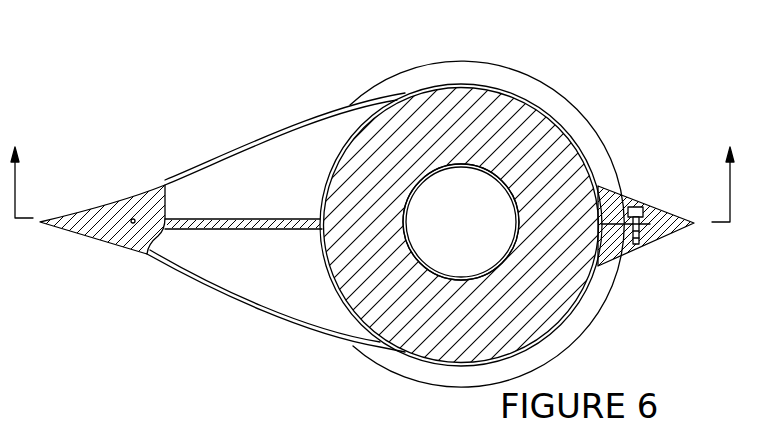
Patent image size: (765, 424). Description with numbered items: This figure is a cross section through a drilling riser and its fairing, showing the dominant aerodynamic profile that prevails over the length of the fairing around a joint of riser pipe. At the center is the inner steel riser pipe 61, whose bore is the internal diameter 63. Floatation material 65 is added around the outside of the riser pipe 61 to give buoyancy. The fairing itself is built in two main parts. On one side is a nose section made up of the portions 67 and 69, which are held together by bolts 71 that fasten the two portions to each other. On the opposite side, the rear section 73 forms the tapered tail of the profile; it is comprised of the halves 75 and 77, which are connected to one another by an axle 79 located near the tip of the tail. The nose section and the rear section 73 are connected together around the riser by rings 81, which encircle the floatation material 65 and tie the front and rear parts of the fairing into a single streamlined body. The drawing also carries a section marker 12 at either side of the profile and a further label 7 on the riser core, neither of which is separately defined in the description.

The rotor hub / shaft 7 is at (567, 148).
The section line 12 is at (375, 172).
The inner steel riser pipe 61 is at (420, 257).
The internal diameter 63 is at (412, 213).
The floatation material 65 is at (530, 114).
The nose section portion 67 is at (670, 217).
The nose section portion 69 is at (642, 235).
The bolts 71 is at (635, 207).
The rear section 73 is at (206, 148).
The rear section half 75 is at (262, 128).
The rear section half 77 is at (283, 285).
The axle 79 is at (133, 223).
The rings 81 is at (487, 74).